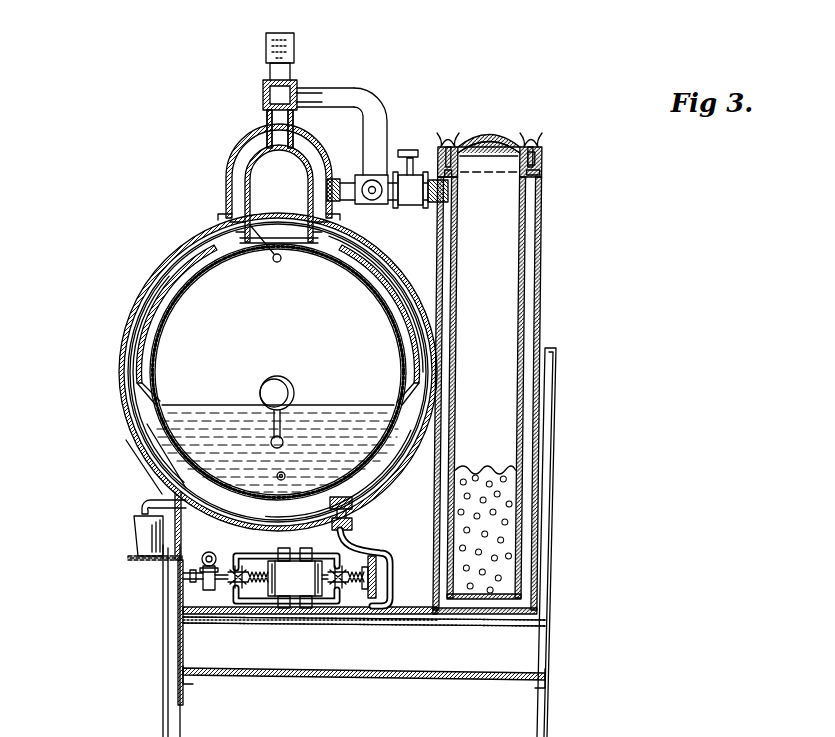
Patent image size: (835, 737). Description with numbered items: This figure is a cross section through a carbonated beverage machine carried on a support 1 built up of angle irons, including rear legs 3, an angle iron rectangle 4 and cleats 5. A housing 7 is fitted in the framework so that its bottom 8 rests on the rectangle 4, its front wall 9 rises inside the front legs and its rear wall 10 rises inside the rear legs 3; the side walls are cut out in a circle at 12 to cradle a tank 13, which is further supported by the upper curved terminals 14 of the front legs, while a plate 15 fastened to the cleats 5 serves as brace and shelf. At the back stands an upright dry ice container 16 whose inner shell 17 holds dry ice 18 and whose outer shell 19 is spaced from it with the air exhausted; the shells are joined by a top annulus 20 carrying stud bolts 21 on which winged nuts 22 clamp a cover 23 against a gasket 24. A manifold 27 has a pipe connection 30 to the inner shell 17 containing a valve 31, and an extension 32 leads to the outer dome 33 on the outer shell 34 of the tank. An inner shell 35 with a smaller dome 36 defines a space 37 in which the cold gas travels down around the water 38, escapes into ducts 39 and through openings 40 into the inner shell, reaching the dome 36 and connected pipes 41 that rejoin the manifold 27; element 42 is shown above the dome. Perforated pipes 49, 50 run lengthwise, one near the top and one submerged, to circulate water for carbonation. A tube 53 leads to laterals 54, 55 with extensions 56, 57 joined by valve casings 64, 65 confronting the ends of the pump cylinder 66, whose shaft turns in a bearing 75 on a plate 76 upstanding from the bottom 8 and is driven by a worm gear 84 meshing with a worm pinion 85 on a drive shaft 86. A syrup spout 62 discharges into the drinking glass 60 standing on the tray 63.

The support 1 is at (563, 476).
The rear legs 3 is at (555, 411).
The angle iron rectangle 4 is at (545, 628).
The cleats 5 is at (540, 681).
The housing 7 is at (181, 610).
The bottom 8 is at (181, 619).
The front wall 9 is at (181, 597).
The rear wall 10 is at (543, 387).
The circular cut-out 12 is at (391, 489).
The tank 13 is at (132, 287).
The upper curved terminals 14 is at (420, 549).
The plate 15 is at (493, 682).
The dry ice container 16 is at (551, 239).
The inner shell 17 is at (527, 260).
The dry ice 18 is at (506, 470).
The outer shell 19 is at (543, 285).
The top annulus 20 is at (543, 168).
The stud bolts 21 is at (538, 131).
The winged nuts 22 is at (543, 141).
The cover 23 is at (500, 152).
The gasket 24 is at (537, 157).
The manifold 27 is at (409, 157).
The pipe connection 30 is at (440, 200).
The valve 31 is at (432, 180).
The extension 32 is at (369, 175).
The outer dome 33 is at (266, 133).
The outer shell 34 is at (173, 243).
The inner shell 35 is at (150, 280).
The dome 36 is at (248, 156).
The space 37 is at (238, 168).
The water 38 is at (187, 400).
The ducts 39 is at (163, 263).
The openings 40 is at (146, 390).
The connected pipes 41 is at (300, 101).
The safety valve 42 is at (291, 44).
The perforated pipe 49 is at (236, 209).
The perforated pipe 50 is at (286, 474).
The tube 53 is at (357, 535).
The lateral 54 is at (349, 590).
The lateral 55 is at (235, 591).
The extension 56 is at (319, 588).
The extension 57 is at (230, 582).
The drinking glass 60 is at (137, 520).
The spout 62 is at (148, 497).
The tray 63 is at (132, 555).
The valve casing 64 is at (334, 583).
The valve casing 65 is at (238, 588).
The cylinder 66 is at (292, 588).
The bearing 75 is at (366, 594).
The plate 76 is at (382, 594).
The worm gear 84 is at (188, 608).
The worm pinion 85 is at (190, 577).
The drive shaft 86 is at (200, 558).